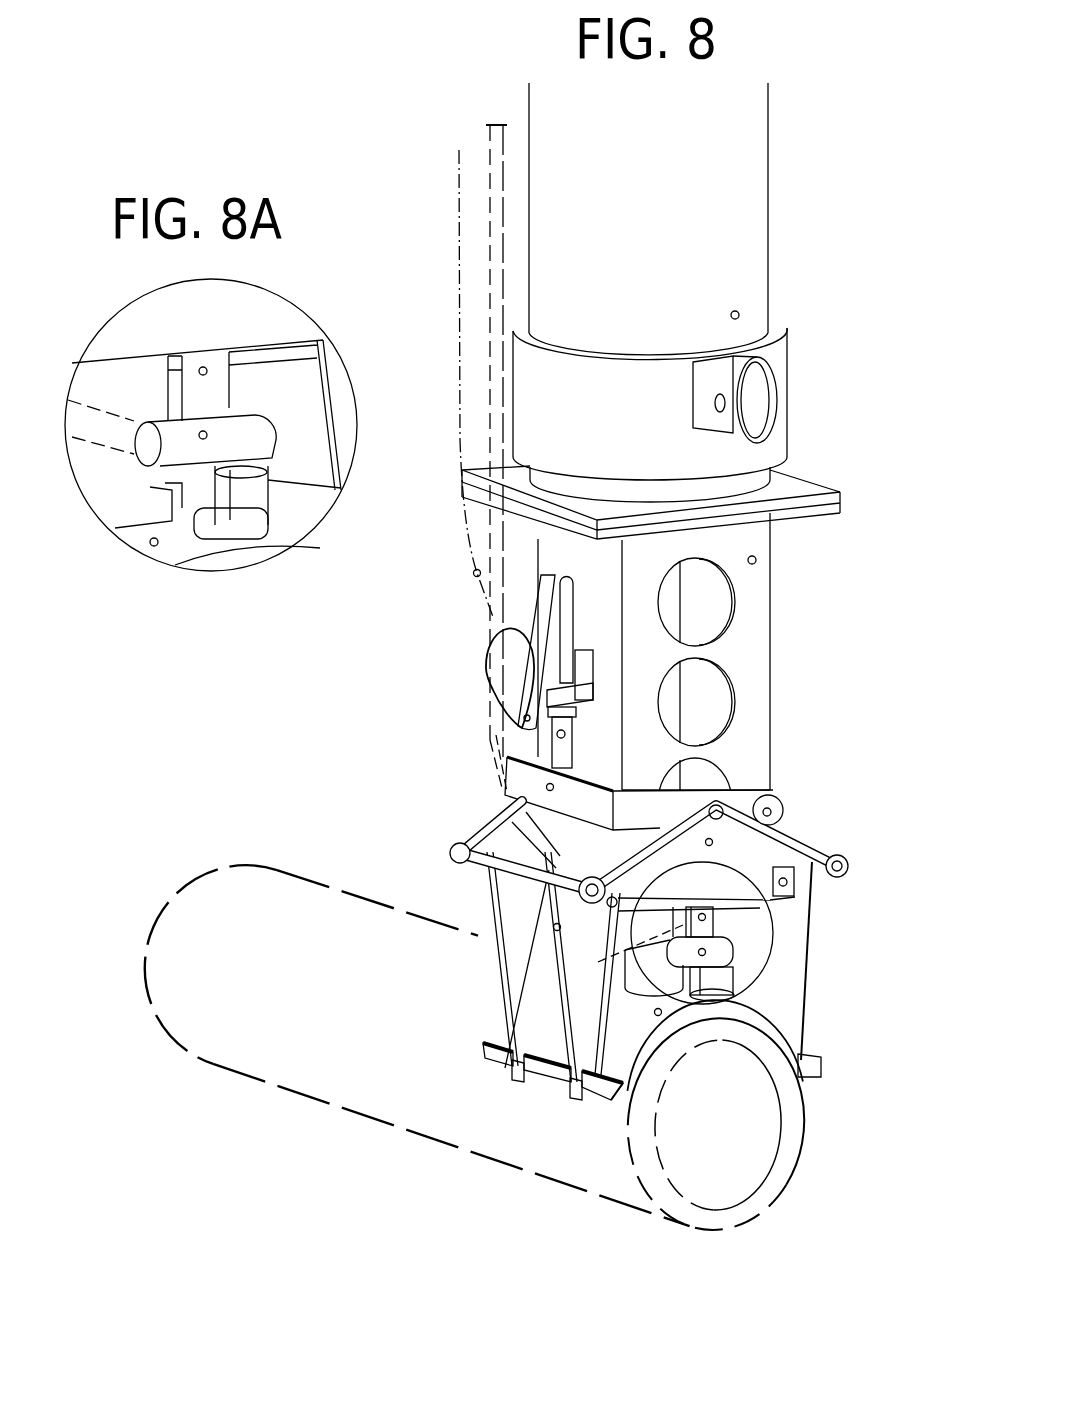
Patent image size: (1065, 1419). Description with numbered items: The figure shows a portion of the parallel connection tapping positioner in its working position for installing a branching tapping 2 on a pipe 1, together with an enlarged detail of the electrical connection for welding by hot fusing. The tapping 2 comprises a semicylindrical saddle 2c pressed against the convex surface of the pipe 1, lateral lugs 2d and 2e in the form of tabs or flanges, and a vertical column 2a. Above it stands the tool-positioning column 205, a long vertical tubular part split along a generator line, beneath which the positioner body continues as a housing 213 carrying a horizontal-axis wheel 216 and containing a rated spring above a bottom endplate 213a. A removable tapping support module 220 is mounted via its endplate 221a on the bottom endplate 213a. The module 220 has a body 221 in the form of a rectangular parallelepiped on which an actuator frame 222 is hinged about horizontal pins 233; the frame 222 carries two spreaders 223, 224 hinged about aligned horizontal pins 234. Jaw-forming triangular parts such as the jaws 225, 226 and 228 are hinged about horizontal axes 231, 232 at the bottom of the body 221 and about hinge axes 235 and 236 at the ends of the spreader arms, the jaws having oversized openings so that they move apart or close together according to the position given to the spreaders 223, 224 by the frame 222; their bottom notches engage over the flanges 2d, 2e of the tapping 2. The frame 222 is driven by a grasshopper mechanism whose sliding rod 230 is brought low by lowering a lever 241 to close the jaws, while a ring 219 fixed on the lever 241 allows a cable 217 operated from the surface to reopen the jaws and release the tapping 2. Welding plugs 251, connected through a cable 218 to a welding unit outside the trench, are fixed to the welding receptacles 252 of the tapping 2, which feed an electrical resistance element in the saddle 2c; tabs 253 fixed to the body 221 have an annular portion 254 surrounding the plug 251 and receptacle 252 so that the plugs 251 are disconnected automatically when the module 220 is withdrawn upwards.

In FIG. 8, the pipe 1 is at (697, 1216).
In FIG. 8, the branching tapping 2 is at (823, 1073).
In FIG. 8, the vertical column 2a is at (640, 993).
In FIG. 8A, the vertical column 2a is at (117, 487).
In FIG. 8, the saddle 2c is at (628, 1062).
In FIG. 8A, the saddle 2c is at (150, 540).
In FIG. 8, the lateral lug 2d is at (822, 1062).
In FIG. 8, the lateral lug 2e is at (618, 1092).
In FIG. 8, the tool-positioning column 205 is at (739, 318).
In FIG. 8, the housing 213 is at (593, 372).
In FIG. 8, the bottom endplate 213a is at (820, 487).
In FIG. 8, the wheel 216 is at (772, 405).
In FIG. 8, the cable 217 is at (474, 575).
In FIG. 8, the cable 218 is at (493, 124).
In FIG. 8, the ring 219 is at (486, 683).
In FIG. 8, the removable tapping support module 220 is at (782, 666).
In FIG. 8, the body 221 is at (756, 562).
In FIG. 8, the endplate 221a is at (838, 510).
In FIG. 8, the actuator frame 222 is at (546, 789).
In FIG. 8, the spreader 223 is at (713, 842).
In FIG. 8, the spreader 224 is at (452, 856).
In FIG. 8, the jaw 225 is at (512, 975).
In FIG. 8, the jaw 226 is at (553, 929).
In FIG. 8, the jaw 228 is at (800, 922).
In FIG. 8, the sliding rod 230 is at (556, 735).
In FIG. 8, the horizontal axis 231 is at (678, 915).
In FIG. 8, the horizontal axis 232 is at (788, 884).
In FIG. 8, the horizontal pin 233 is at (770, 808).
In FIG. 8, the horizontal pin 234 is at (718, 803).
In FIG. 8, the hinge axis 235 is at (590, 880).
In FIG. 8, the hinge axis 236 is at (841, 858).
In FIG. 8, the lever 241 is at (556, 660).
In FIG. 8, the welding plug 251 is at (699, 953).
In FIG. 8A, the welding plug 251 is at (200, 433).
In FIG. 8, the welding receptacle 252 is at (662, 1012).
In FIG. 8A, the welding receptacle 252 is at (250, 540).
In FIG. 8, the tab 253 is at (705, 918).
In FIG. 8A, the tab 253 is at (200, 370).
In FIG. 8, the annular portion 254 is at (722, 980).
In FIG. 8A, the annular portion 254 is at (258, 502).